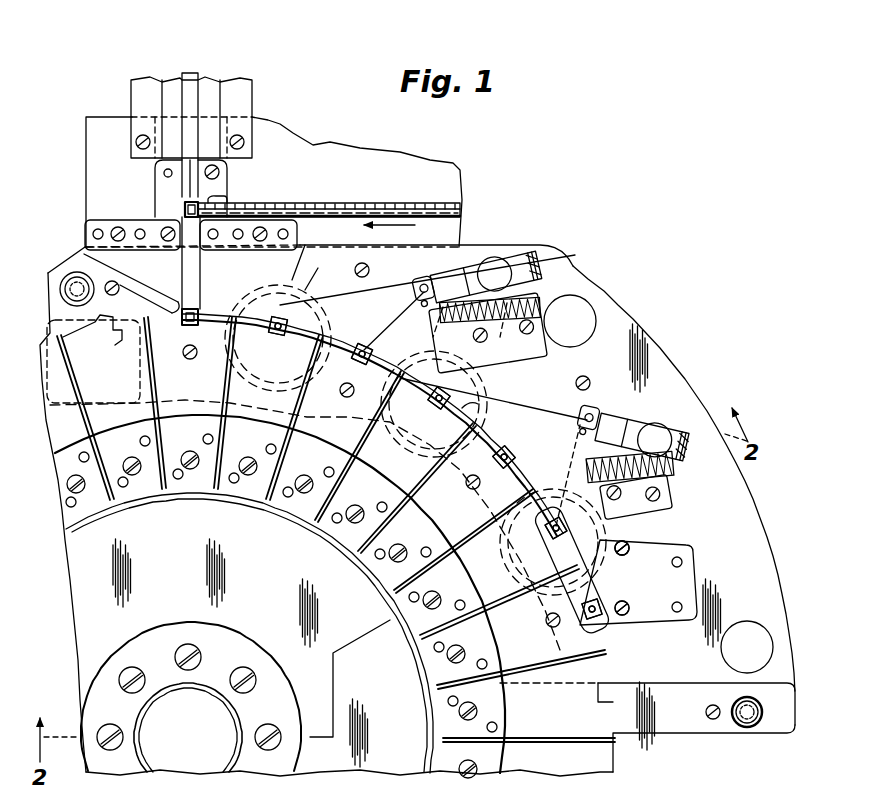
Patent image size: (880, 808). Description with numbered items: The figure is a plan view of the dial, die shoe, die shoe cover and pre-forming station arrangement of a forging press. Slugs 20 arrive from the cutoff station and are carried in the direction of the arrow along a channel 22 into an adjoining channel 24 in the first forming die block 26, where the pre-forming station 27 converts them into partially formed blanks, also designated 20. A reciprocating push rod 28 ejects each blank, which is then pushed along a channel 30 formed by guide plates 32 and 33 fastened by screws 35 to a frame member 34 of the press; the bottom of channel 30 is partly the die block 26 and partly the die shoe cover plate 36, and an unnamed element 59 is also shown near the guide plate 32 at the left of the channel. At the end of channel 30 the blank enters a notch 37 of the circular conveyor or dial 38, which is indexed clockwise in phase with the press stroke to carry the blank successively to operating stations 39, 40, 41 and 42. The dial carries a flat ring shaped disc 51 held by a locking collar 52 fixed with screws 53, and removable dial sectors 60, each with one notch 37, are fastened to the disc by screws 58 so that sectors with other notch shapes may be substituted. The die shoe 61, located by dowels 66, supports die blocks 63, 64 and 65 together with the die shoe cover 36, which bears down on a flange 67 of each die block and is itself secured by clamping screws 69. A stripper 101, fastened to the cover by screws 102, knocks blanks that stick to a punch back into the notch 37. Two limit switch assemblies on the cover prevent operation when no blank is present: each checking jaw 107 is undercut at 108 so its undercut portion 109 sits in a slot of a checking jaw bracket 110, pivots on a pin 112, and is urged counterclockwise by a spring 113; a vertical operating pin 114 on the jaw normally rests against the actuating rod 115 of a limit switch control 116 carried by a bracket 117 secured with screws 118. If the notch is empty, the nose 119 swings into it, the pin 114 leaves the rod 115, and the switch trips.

The slugs 20 is at (185, 205).
The channel 22 is at (340, 202).
The adjoining channel 24 is at (226, 197).
The first forming die block 26 is at (158, 178).
The pre-forming or first forming station 27 is at (182, 210).
The reciprocating push rod 28 is at (200, 76).
The channel 30 is at (182, 272).
The guide plate 32 is at (138, 293).
The guide plate 33 is at (305, 254).
The frame member 34 is at (88, 163).
The screws 35 is at (118, 228).
The die shoe cover plate 36 is at (670, 360).
The notch 37 is at (115, 340).
The circular conveyor or dial 38 is at (562, 777).
The operating station 39 is at (268, 334).
The operating station 40 is at (432, 408).
The operating station 41 is at (540, 534).
The operating station 42 is at (602, 620).
The flat ring shaped disc 51 is at (368, 698).
The locking collar 52 is at (236, 638).
The screws 53 is at (122, 690).
The screws 58 is at (200, 458).
The pivot 59 is at (70, 274).
The removable dial sectors 60 is at (160, 530).
The die shoe 61 is at (660, 730).
The die block 63 is at (318, 271).
The die block 64 is at (473, 397).
The die block 65 is at (630, 546).
The dowels 66 is at (747, 728).
The flange 67 is at (276, 384).
The clamping screws 69 is at (114, 280).
The stripper 101 is at (694, 574).
The screws 102 is at (628, 556).
The checking jaw 107 is at (356, 284).
The undercut 108 is at (462, 409).
The undercut portion 109 is at (424, 282).
The checking jaw bracket 110 is at (432, 331).
The pin 112 is at (490, 364).
The spring 113 is at (569, 368).
The vertical operating pin 114 is at (434, 278).
The actuating rod 115 is at (430, 286).
The limit switch control 116 is at (548, 270).
The bracket 117 is at (582, 336).
The screws 118 is at (534, 354).
The nose 119 is at (270, 318).